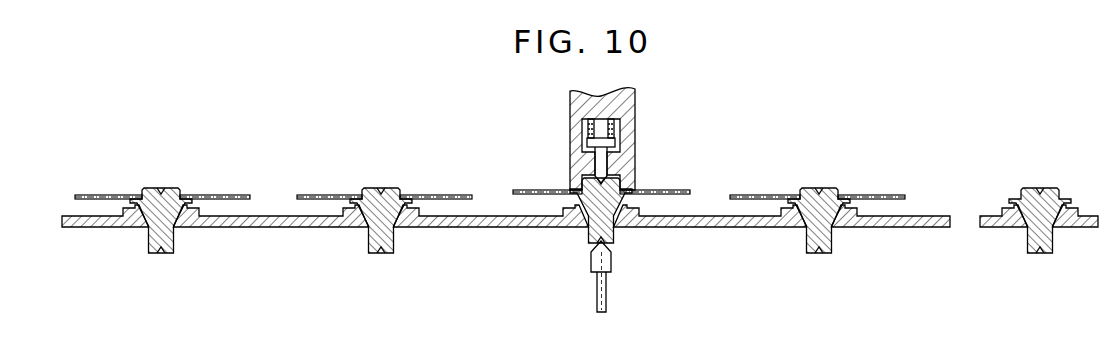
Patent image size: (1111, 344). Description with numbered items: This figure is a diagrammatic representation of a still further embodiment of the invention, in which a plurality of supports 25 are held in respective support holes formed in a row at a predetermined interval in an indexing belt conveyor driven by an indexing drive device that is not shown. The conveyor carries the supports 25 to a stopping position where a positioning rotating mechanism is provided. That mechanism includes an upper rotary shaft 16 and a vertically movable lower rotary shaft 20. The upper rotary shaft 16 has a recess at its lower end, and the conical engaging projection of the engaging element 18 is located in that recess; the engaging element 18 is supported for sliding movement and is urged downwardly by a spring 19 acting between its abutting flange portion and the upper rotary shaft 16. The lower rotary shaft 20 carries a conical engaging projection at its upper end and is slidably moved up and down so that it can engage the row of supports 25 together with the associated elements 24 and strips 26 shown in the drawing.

The upper rotary shaft 16 is at (573, 130).
The engaging element 18 is at (588, 165).
The spring 19 is at (615, 122).
The lower rotary shaft 20 is at (607, 288).
The stud 24 is at (147, 190).
The support 25 is at (693, 228).
The strips 26 is at (295, 197).